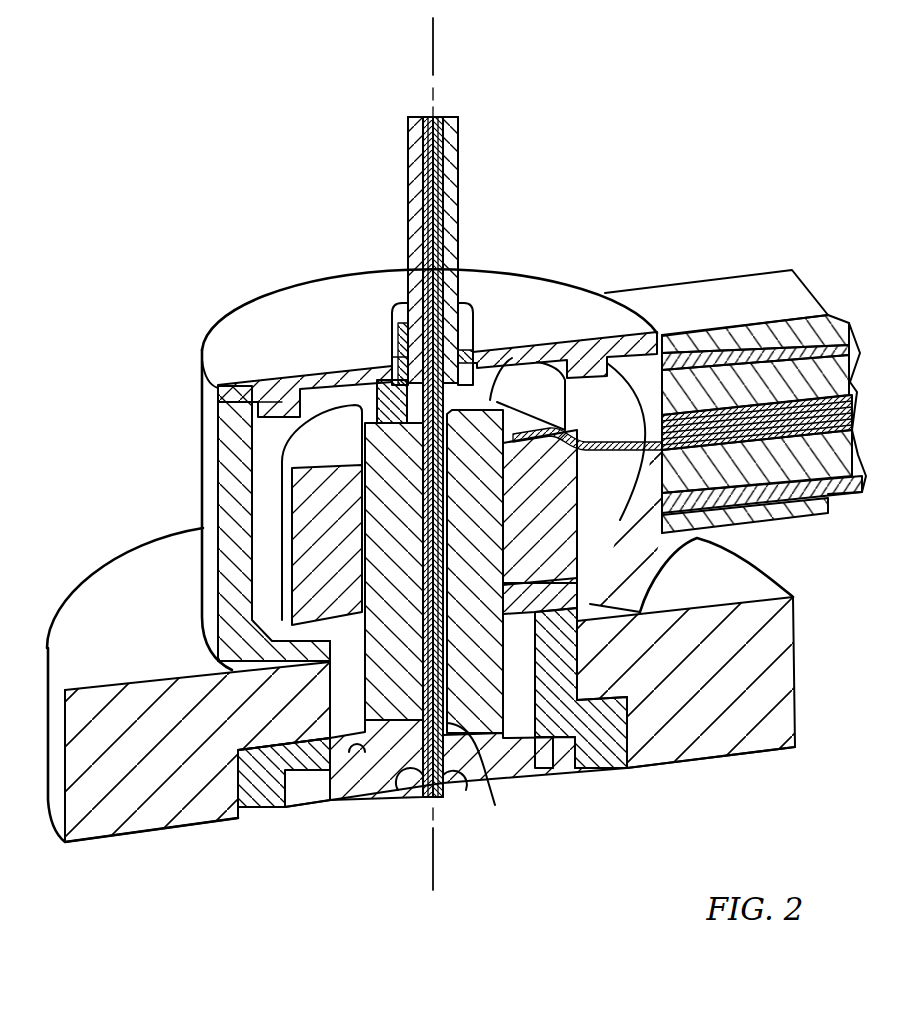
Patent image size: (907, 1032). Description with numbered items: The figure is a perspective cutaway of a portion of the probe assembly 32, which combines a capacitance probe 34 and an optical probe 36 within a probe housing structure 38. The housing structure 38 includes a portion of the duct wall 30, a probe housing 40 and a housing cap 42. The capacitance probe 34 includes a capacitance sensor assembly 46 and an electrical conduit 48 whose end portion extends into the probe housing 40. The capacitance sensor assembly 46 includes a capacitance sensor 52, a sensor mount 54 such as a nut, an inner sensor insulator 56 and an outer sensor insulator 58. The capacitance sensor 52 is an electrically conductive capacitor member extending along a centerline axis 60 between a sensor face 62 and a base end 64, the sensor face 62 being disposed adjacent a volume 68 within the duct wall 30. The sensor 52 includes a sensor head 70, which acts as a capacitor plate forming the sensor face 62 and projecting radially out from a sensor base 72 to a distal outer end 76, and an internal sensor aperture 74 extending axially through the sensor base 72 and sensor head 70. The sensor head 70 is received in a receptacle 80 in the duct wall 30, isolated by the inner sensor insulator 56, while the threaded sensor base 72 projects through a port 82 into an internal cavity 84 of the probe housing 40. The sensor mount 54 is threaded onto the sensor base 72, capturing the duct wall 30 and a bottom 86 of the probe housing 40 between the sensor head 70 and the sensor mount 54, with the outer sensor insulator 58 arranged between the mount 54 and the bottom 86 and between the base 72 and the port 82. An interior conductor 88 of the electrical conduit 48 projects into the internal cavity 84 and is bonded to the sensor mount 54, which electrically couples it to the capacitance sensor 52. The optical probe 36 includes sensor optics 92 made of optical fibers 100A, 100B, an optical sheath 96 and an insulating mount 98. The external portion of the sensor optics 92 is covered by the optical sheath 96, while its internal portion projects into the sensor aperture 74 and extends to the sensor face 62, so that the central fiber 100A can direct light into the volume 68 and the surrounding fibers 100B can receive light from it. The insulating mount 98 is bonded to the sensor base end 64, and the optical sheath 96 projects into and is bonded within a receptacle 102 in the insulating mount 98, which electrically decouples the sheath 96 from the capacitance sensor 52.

The duct wall 30 is at (805, 688).
The probe assembly 32 is at (92, 252).
The capacitance probe 34 is at (312, 838).
The optical probe 36 is at (447, 825).
The probe housing structure 38 is at (106, 545).
The probe housing 40 is at (209, 451).
The housing cap 42 is at (227, 328).
The capacitance sensor assembly 46 is at (550, 795).
The electrical conduit 48 is at (851, 318).
The capacitance sensor 52 is at (370, 797).
The sensor mount 54 is at (311, 543).
The inner sensor insulator 56 is at (238, 815).
The outer sensor insulator 58 is at (330, 687).
The centerline axis 60 is at (433, 33).
The sensor face 62 is at (567, 765).
The base end 64 is at (505, 372).
The volume 68 is at (557, 928).
The sensor head 70 is at (327, 807).
The sensor base 72 is at (381, 510).
The sensor aperture 74 is at (452, 530).
The distal outer end 76 is at (265, 795).
The receptacle 80 is at (634, 736).
The port 82 is at (547, 672).
The internal cavity 84 is at (243, 510).
The bottom 86 is at (597, 640).
The interior conductor 88 is at (587, 420).
The sensor optics 92 is at (443, 108).
The optical sheath 96 is at (460, 160).
The insulating mount 98 is at (475, 323).
The optical fiber 100A is at (453, 772).
The optical fibers 100B is at (477, 767).
The receptacle 102 is at (396, 332).